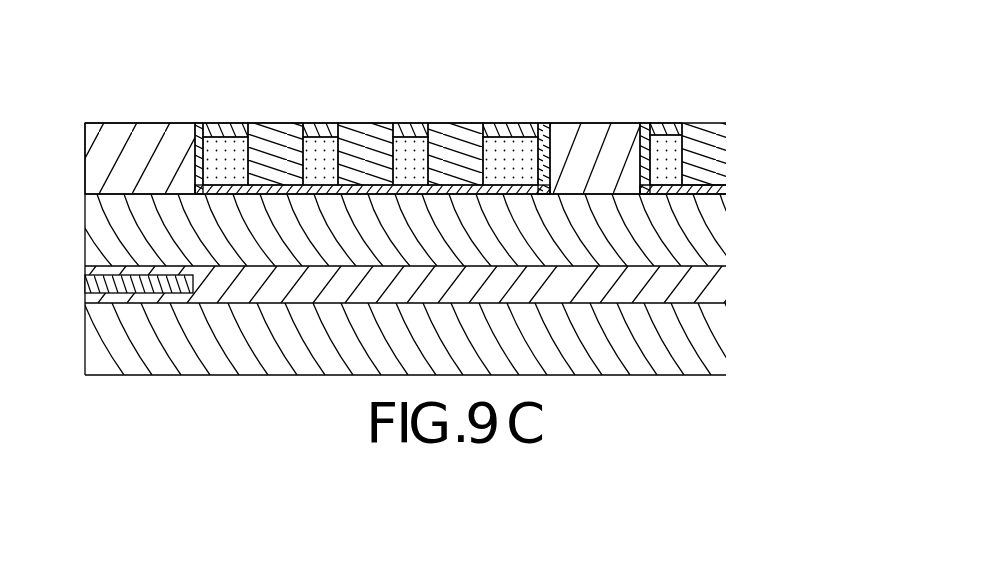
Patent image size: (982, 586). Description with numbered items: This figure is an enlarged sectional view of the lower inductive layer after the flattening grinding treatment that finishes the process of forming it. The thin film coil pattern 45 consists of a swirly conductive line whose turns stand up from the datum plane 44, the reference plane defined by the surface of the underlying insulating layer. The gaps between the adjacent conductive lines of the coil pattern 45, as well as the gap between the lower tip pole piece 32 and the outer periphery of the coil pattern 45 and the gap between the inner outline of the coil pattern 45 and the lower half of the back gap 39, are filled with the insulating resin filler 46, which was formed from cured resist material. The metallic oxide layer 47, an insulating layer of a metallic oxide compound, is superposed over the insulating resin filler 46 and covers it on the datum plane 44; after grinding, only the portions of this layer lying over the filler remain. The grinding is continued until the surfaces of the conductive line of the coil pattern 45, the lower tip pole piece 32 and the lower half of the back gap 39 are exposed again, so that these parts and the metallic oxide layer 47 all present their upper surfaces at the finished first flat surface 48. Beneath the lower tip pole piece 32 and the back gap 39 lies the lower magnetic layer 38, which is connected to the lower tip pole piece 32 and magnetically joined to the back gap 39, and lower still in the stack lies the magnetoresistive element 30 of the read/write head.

The magnetoresistive (MR) element 30 is at (85, 283).
The lower tip pole piece 32 is at (85, 162).
The lower magnetic layer 38 is at (85, 227).
The back gap 39 is at (602, 135).
The datum plane 44 is at (720, 180).
The thin film coil pattern 45 is at (375, 122).
The insulating resin filler 46 is at (242, 150).
The metallic oxide layer 47 is at (223, 130).
The first flat surface 48 is at (122, 122).